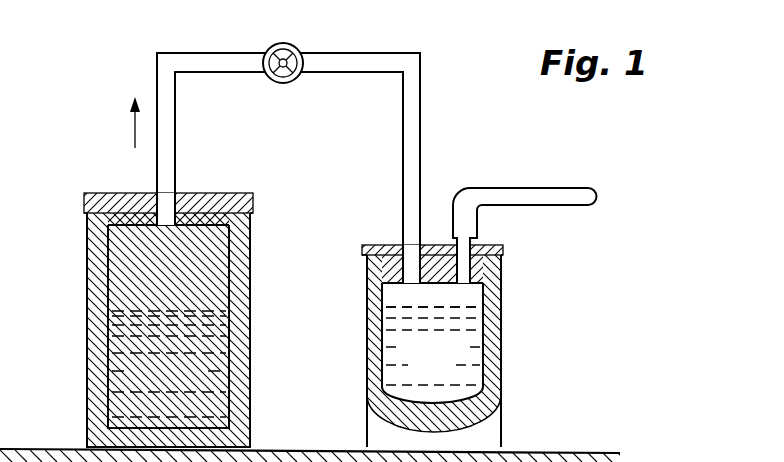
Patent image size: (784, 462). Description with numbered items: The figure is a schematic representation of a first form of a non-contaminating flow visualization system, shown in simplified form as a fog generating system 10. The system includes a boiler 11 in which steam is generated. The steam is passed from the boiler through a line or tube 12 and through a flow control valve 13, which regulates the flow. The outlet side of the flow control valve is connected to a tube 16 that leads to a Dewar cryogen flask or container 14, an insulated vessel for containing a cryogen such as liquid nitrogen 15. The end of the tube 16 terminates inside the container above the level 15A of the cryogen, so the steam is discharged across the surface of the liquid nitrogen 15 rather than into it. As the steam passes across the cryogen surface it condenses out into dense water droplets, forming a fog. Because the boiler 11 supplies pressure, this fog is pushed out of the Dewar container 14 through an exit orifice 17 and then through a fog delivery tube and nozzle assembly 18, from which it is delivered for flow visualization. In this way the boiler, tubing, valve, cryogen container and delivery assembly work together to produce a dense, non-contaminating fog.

The fog generating system 10 is at (152, 83).
The boiler 11 is at (82, 305).
The line or tube 12 is at (177, 143).
The flow control valve 13 is at (283, 84).
The Dewar cryogen flask or container 14 is at (508, 393).
The liquid nitrogen 15 is at (472, 365).
The level of the cryogen 15A is at (472, 307).
The tube 16 is at (421, 122).
The exit orifice 17 is at (470, 281).
The fog delivery tube and nozzle assembly 18 is at (524, 178).